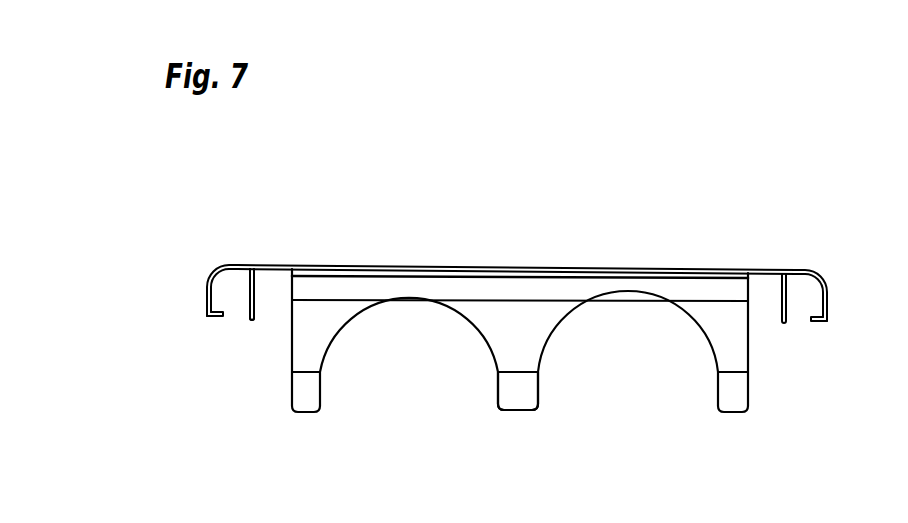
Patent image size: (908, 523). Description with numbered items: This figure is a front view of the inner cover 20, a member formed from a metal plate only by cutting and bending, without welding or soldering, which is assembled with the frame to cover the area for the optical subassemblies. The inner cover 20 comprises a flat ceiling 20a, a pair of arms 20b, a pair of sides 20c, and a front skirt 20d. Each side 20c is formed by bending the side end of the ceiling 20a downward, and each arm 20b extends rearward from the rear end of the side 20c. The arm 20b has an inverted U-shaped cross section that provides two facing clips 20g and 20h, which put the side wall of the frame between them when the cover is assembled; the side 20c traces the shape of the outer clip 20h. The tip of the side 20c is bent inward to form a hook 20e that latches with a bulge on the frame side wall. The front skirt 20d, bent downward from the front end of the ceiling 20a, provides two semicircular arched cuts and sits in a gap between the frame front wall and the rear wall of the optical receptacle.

The inner cover 20 is at (602, 204).
The ceiling 20a is at (275, 265).
The arm 20b is at (255, 322).
The side 20c is at (215, 270).
The front skirt 20d is at (518, 397).
The hook 20e is at (212, 320).
The clip 20g is at (258, 293).
The outer clip 20h is at (206, 305).